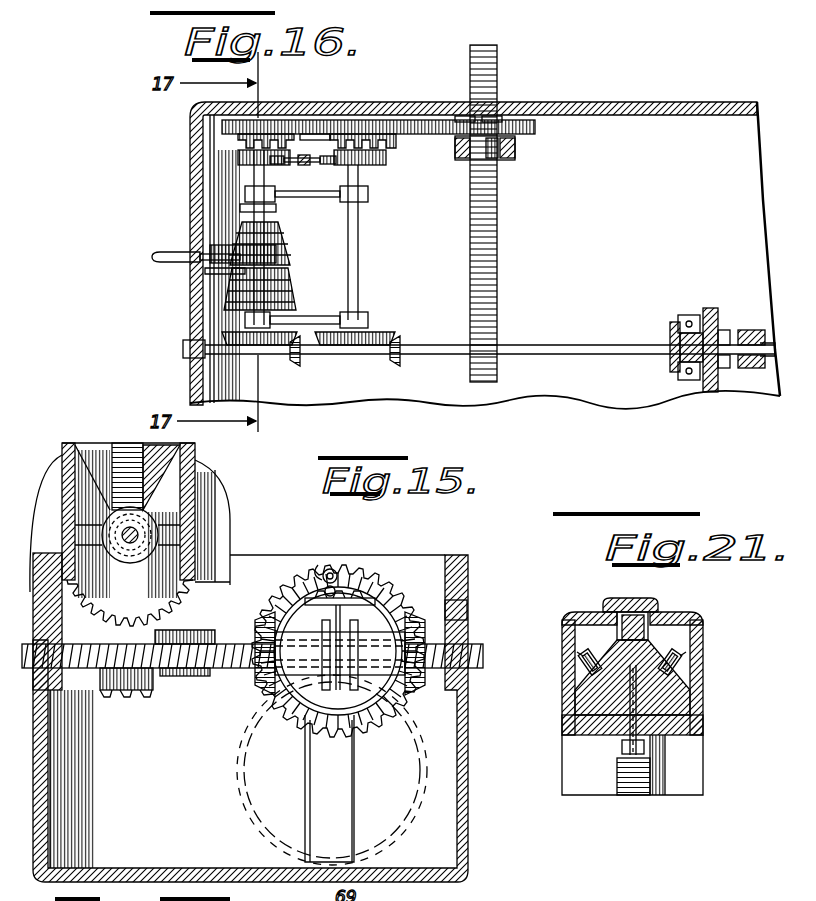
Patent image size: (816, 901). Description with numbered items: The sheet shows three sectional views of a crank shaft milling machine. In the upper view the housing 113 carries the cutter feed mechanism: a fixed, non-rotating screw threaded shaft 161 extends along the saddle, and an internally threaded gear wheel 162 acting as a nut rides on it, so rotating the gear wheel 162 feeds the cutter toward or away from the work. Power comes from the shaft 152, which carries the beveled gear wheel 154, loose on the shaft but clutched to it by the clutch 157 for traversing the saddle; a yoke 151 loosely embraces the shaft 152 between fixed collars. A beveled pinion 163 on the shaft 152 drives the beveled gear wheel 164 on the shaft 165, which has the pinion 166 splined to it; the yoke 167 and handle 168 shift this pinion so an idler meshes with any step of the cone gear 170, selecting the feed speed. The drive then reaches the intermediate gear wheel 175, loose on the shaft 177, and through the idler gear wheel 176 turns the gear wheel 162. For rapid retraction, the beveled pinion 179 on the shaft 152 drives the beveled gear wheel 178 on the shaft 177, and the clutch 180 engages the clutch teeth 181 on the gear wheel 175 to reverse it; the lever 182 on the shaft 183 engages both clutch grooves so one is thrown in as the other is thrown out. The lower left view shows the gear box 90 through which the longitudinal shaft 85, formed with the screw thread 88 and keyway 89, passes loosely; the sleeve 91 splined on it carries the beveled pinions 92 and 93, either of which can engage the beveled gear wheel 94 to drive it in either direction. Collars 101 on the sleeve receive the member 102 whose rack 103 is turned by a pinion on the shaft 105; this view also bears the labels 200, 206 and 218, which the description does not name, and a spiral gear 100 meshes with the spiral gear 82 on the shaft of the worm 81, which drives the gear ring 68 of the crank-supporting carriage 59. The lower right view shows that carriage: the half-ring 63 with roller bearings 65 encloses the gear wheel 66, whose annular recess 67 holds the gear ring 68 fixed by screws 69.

In FIG. 16, the housing 113 is at (692, 118).
In FIG. 16, the yoke 151 is at (690, 382).
In FIG. 16, the shaft 152 is at (584, 348).
In FIG. 16, the beveled gear wheel 154 is at (708, 310).
In FIG. 16, the clutch 157 is at (745, 376).
In FIG. 16, the screw threaded shaft 161 is at (498, 303).
In FIG. 16, the internally threaded gear wheel 162 is at (505, 115).
In FIG. 16, the beveled pinion 163 is at (296, 366).
In FIG. 16, the beveled gear wheel 164 is at (253, 340).
In FIG. 16, the shaft 165 is at (256, 212).
In FIG. 16, the pinion 166 is at (205, 283).
In FIG. 16, the yoke 167 is at (215, 248).
In FIG. 16, the handle 168 is at (150, 257).
In FIG. 16, the cone gear 170 is at (282, 268).
In FIG. 16, the intermediate gear wheel 175 is at (325, 120).
In FIG. 16, the idler gear wheel 176 is at (518, 140).
In FIG. 16, the shaft 177 is at (359, 262).
In FIG. 16, the beveled gear wheel 178 is at (380, 332).
In FIG. 16, the beveled pinion 179 is at (383, 357).
In FIG. 16, the clutch 180 is at (387, 163).
In FIG. 16, the clutch teeth 181 is at (396, 136).
In FIG. 16, the lever 182 is at (324, 164).
In FIG. 16, the shaft 183 is at (307, 156).
In FIG. 15, the carriage 59 is at (196, 483).
In FIG. 21, the carriage 59 is at (705, 668).
In FIG. 15, the half-ring 63 is at (196, 458).
In FIG. 21, the half-ring 63 is at (706, 696).
In FIG. 21, the roller bearings 65 is at (672, 650).
In FIG. 21, the gear wheel 66 is at (670, 725).
In FIG. 21, the annular recess 67 is at (612, 680).
In FIG. 15, the gear ring 68 is at (112, 456).
In FIG. 21, the gear ring 68 is at (634, 640).
In FIG. 21, the screws 69 is at (668, 795).
In FIG. 15, the worm 81 is at (145, 530).
In FIG. 15, the spiral gear 82 is at (183, 610).
In FIG. 15, the shaft 85 is at (483, 652).
In FIG. 15, the screw thread 88 is at (186, 639).
In FIG. 15, the keyway 89 is at (208, 676).
In FIG. 15, the gear box 90 is at (470, 610).
In FIG. 15, the sleeve 91 is at (393, 635).
In FIG. 15, the beveled pinion 92 is at (468, 600).
In FIG. 15, the beveled pinion 93 is at (265, 605).
In FIG. 15, the beveled gear wheel 94 is at (297, 625).
In FIG. 15, the spiral gears 100 is at (130, 700).
In FIG. 15, the collars 101 is at (367, 722).
In FIG. 15, the member 102 is at (407, 640).
In FIG. 15, the rack 103 is at (346, 640).
In FIG. 15, the shaft 105 is at (340, 598).
In FIG. 15, the dial circle 200 is at (262, 798).
In FIG. 15, the pinion 206 is at (330, 569).
In FIG. 15, the spring 218 is at (331, 569).